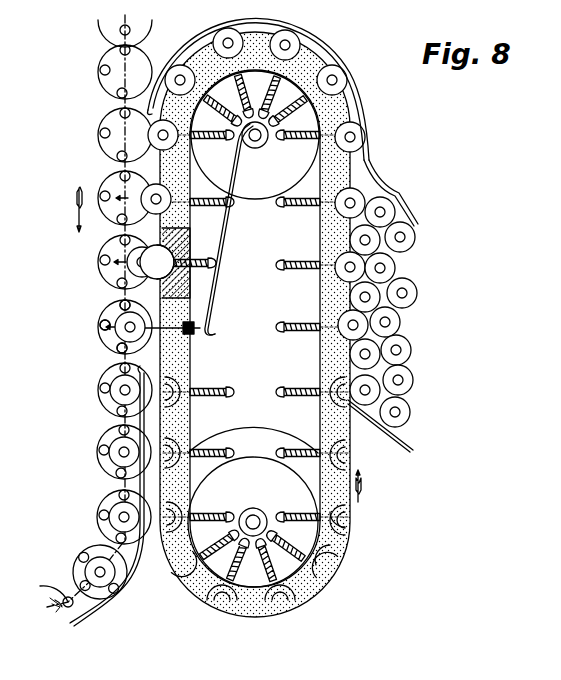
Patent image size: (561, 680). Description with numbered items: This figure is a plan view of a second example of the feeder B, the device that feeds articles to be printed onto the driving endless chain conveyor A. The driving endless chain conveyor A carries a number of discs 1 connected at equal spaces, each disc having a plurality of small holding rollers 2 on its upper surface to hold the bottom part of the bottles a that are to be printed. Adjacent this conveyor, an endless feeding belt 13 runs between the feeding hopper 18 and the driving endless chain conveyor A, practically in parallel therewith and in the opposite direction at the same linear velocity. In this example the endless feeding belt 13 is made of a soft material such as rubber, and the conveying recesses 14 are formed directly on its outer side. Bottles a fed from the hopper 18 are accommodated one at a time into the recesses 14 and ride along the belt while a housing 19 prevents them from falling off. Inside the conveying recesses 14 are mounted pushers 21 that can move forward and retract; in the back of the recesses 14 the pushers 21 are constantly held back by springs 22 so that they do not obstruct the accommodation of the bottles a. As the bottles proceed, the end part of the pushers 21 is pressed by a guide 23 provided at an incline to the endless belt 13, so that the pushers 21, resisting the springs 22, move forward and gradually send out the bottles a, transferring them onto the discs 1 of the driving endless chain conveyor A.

The discs 1 is at (106, 338).
The small holding rollers 2 is at (101, 324).
The endless feeding belt 13 is at (338, 426).
The conveying recesses 14 is at (162, 272).
The feeding hopper 18 is at (403, 224).
The housing 19 is at (367, 110).
The pushers 21 is at (188, 252).
The springs 22 is at (212, 264).
The guide 23 is at (214, 302).
The bottles a is at (128, 270).
The driving endless chain conveyor A is at (113, 243).
The feeder B is at (256, 356).